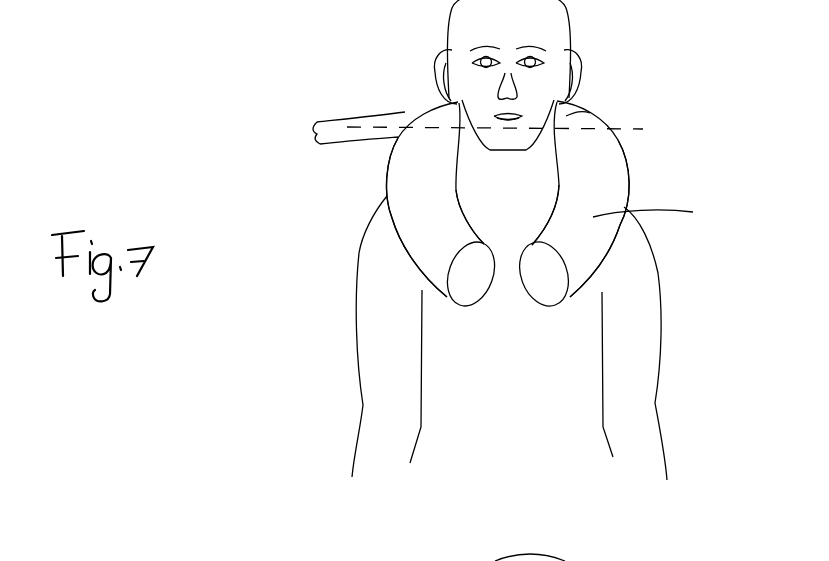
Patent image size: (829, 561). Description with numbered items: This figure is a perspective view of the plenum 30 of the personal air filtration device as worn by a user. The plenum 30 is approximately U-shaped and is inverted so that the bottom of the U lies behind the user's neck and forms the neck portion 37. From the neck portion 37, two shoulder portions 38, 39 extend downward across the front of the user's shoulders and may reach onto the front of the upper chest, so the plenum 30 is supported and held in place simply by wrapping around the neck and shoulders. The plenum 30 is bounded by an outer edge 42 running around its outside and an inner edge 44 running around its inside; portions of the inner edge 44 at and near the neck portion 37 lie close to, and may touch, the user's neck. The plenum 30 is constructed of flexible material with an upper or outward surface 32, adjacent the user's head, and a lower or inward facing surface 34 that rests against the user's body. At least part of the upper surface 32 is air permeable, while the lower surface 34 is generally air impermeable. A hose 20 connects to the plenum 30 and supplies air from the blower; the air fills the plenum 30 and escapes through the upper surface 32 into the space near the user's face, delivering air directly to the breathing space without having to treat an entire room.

The hose 20 is at (359, 116).
The plenum 30 is at (598, 183).
The upper surface 32 is at (661, 218).
The lower surface 34 is at (545, 305).
The neck portion 37 is at (567, 116).
The shoulder portion 38 is at (412, 237).
The shoulder portion 39 is at (597, 233).
The outer edge 42 is at (380, 178).
The inner edge 44 is at (540, 218).